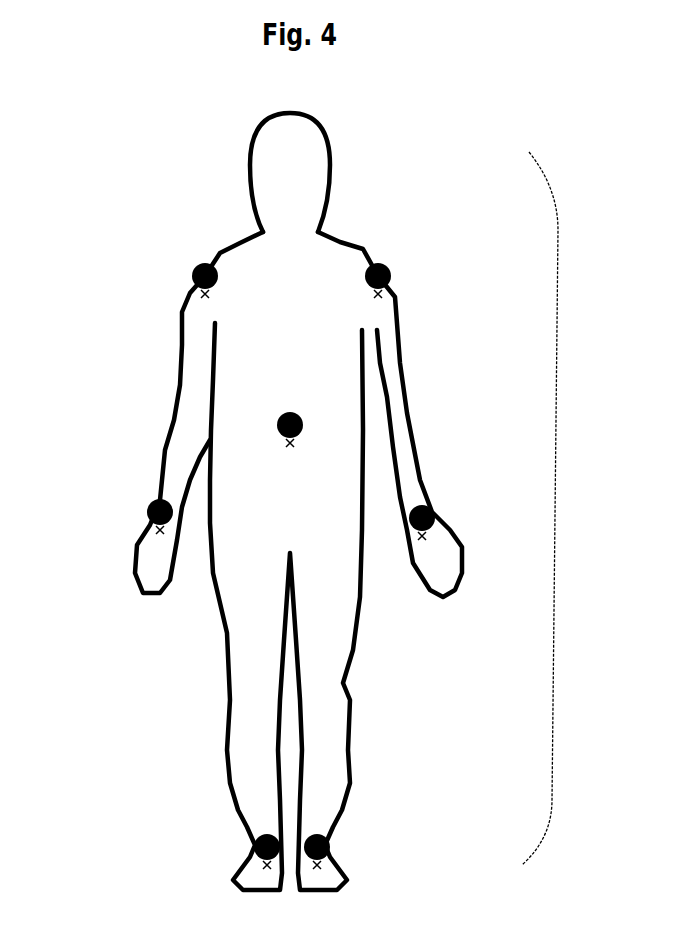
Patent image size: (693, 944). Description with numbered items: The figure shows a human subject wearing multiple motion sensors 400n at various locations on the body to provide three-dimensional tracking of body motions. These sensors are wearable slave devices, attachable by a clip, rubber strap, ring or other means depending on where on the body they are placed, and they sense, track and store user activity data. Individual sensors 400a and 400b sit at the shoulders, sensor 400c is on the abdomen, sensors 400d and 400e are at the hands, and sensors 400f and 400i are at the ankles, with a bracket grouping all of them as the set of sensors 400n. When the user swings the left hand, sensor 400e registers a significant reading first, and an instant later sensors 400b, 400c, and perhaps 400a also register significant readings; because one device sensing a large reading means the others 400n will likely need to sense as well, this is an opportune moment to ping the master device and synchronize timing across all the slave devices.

The motion sensor 400a is at (205, 256).
The motion sensor 400b is at (378, 263).
The motion sensor 400c is at (290, 412).
The motion sensor 400d is at (160, 492).
The motion sensor 400e is at (422, 498).
The motion sensor 400f is at (267, 827).
The motion sensor 400i is at (317, 827).
The motion sensors 400n is at (555, 509).